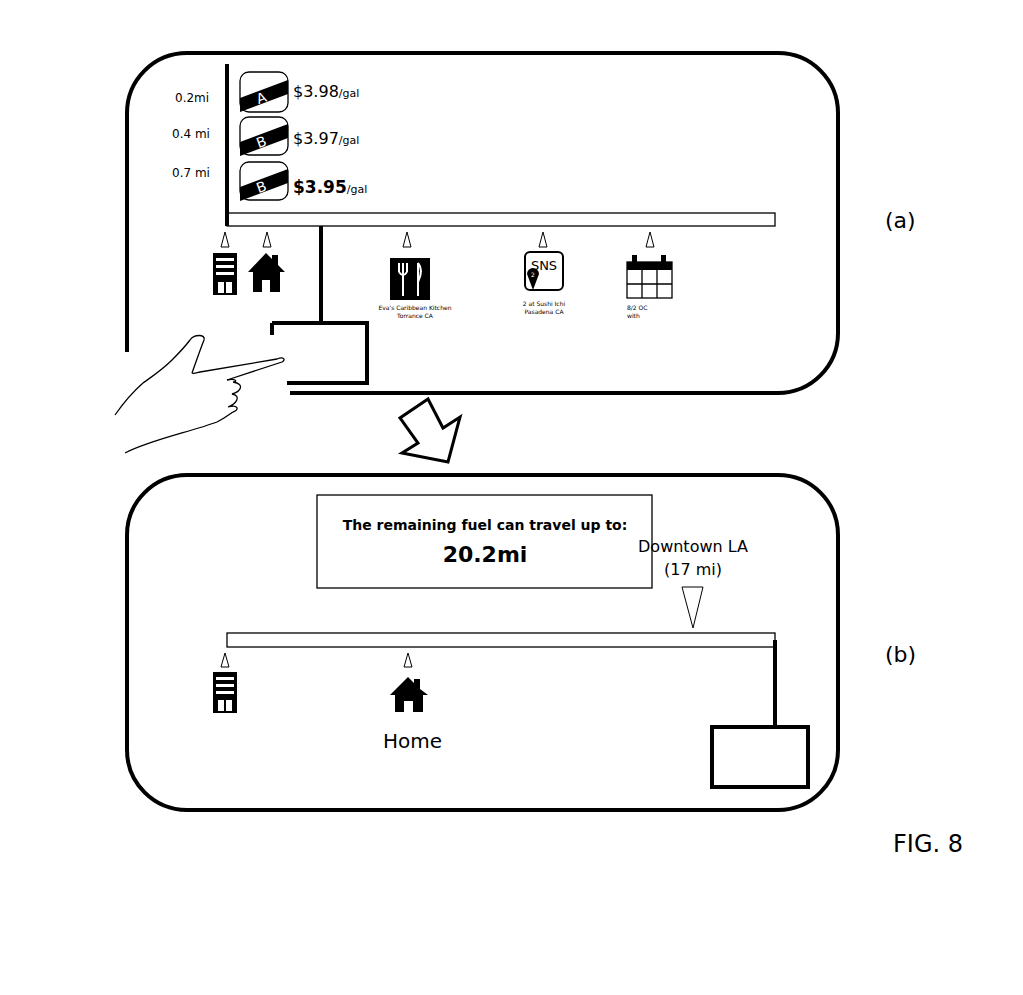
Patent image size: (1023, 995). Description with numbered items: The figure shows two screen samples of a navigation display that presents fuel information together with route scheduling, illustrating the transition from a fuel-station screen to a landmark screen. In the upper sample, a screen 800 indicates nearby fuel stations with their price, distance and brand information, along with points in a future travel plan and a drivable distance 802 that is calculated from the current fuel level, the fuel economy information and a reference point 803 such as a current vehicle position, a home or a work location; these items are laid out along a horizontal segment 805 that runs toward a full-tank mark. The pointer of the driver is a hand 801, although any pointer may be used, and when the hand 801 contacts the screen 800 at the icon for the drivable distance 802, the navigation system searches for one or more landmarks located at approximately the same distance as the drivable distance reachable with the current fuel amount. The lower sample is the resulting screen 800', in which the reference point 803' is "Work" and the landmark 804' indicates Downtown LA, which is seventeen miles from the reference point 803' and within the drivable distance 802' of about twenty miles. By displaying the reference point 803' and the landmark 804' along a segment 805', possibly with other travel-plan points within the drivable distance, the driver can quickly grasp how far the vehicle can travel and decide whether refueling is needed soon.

The screen 800 is at (453, 223).
The hand 801 is at (132, 391).
The drivable distance 802 is at (359, 304).
The reference point 803 is at (189, 280).
The segment 805 is at (525, 250).
The screen sample 800' is at (453, 642).
The drivable distance 802' is at (715, 713).
The reference point 803' is at (264, 712).
The landmark 804' is at (738, 607).
The segment 805' is at (501, 606).